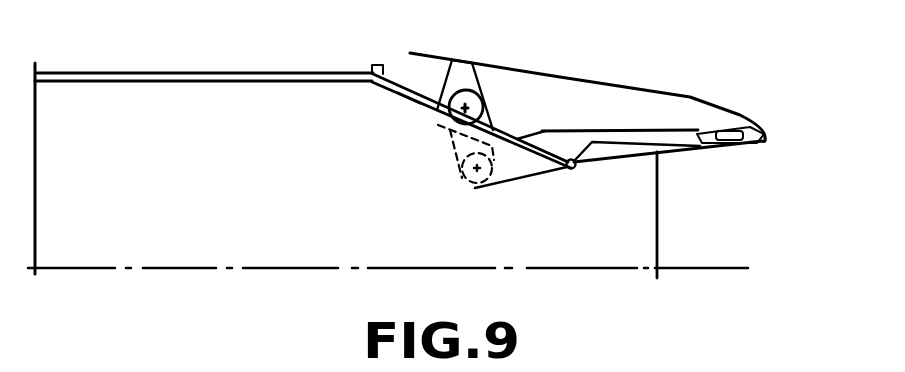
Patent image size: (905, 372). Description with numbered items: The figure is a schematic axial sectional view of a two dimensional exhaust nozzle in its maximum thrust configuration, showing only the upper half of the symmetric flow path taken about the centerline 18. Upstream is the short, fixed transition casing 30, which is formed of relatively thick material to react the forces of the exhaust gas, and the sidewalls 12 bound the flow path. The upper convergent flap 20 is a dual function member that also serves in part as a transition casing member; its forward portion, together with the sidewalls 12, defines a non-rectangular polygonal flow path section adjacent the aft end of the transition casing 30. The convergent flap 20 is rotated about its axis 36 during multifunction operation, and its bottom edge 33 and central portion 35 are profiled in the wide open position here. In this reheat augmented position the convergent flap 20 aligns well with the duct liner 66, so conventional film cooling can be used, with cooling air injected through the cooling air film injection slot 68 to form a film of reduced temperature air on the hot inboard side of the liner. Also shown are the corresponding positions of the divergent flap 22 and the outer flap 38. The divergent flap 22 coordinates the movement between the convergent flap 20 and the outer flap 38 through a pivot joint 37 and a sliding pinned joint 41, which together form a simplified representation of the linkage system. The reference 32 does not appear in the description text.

The sidewalls 12 is at (658, 243).
The centerline 18 is at (99, 243).
The convergent flap 20 is at (507, 132).
The divergent flap 22 is at (690, 150).
The transition casing 30 is at (403, 86).
The cover plate 32 is at (225, 52).
The bottom edge 33 is at (498, 186).
The central portion 35 is at (535, 130).
The axis 36 is at (476, 170).
The pivot joint 37 is at (575, 170).
The outer flap 38 is at (615, 83).
The sliding pinned joint 41 is at (735, 144).
The duct liner 66 is at (413, 106).
The cooling air film injection slot 68 is at (458, 60).